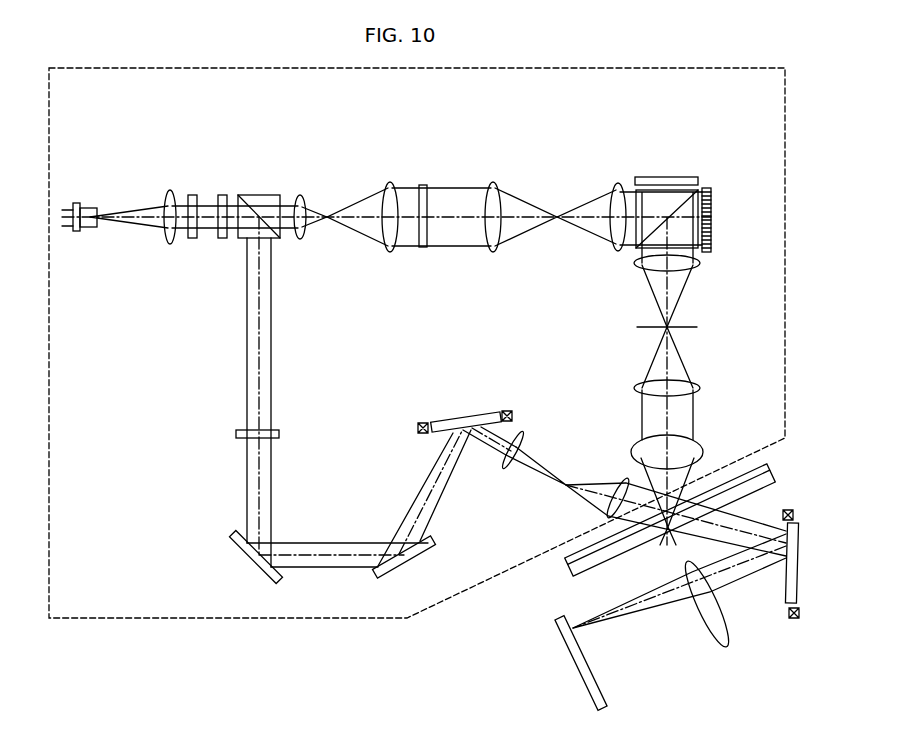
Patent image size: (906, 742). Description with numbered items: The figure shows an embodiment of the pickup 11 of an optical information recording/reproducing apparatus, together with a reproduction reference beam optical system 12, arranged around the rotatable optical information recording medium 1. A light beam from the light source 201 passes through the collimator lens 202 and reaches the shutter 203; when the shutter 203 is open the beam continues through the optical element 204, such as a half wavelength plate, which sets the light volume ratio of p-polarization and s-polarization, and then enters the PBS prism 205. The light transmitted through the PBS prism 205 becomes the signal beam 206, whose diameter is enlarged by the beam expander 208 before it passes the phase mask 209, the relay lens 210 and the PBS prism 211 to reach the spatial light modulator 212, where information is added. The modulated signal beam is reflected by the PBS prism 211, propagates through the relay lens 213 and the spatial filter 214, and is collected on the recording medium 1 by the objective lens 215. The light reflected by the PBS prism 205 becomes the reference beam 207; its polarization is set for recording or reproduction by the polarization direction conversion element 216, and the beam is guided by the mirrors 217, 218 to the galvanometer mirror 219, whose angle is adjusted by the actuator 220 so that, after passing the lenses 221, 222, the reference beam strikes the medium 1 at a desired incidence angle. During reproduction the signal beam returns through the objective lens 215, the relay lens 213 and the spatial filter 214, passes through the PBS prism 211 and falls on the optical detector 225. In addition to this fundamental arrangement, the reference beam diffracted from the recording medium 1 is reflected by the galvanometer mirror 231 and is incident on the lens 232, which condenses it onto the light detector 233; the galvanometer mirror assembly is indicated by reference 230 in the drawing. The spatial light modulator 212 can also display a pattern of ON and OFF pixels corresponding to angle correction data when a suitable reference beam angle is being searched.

The optical information recording medium 1 is at (570, 573).
The pickup 11 is at (108, 620).
The reproduction reference beam optical system 12 is at (738, 657).
The light source 201 is at (90, 207).
The collimator lens 202 is at (168, 192).
The shutter 203 is at (193, 195).
The optical element 204 is at (223, 195).
The PBS prism 205 is at (242, 236).
The signal beam 206 is at (452, 200).
The reference beam 207 is at (264, 319).
The beam expander 208 is at (387, 177).
The phase mask 209 is at (423, 250).
The relay lens 210 is at (500, 177).
The PBS prism 211 is at (650, 205).
The spatial light modulator 212 is at (713, 230).
The relay lens 213 is at (624, 263).
The spatial filter 214 is at (700, 327).
The objective lens 215 is at (698, 455).
The polarization direction conversion element 216 is at (235, 434).
The mirror 217 is at (251, 561).
The mirror 218 is at (405, 566).
The galvanometer mirror 219 is at (470, 415).
The actuator 220 is at (515, 413).
The lens 221 is at (512, 469).
The lens 222 is at (608, 478).
The optical detector 225 is at (690, 177).
The galvano mirror unit 230 is at (800, 518).
The galvanometer mirror 231 is at (786, 585).
The lens 232 is at (718, 647).
The light detector 233 is at (603, 708).